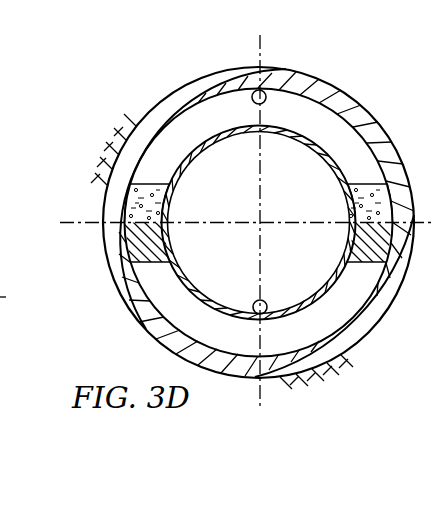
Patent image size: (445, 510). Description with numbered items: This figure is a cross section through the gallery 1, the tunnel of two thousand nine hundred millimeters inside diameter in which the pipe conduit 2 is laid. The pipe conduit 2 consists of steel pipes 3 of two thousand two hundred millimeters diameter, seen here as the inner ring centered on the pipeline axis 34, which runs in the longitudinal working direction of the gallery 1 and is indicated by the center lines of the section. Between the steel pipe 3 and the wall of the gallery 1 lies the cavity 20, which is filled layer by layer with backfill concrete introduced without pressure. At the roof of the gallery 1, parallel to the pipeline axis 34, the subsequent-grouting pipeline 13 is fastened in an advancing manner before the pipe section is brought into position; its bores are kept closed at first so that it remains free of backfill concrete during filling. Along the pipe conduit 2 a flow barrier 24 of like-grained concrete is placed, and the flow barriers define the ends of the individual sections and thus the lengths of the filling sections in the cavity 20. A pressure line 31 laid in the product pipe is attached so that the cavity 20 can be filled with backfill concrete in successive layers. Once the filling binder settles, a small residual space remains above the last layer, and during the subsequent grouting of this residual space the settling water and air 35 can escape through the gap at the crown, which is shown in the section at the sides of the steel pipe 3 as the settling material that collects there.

The gallery 1 is at (157, 112).
The pipe conduit 2 is at (335, 285).
The steel pipe 3 is at (298, 306).
The subsequent-grouting pipeline 13 is at (250, 80).
The cavity 20 is at (180, 148).
The flow barrier 24 is at (350, 311).
The pressure line 31 is at (255, 303).
The pipeline axis 34 is at (92, 232).
The settling water and/or air 35 is at (350, 190).